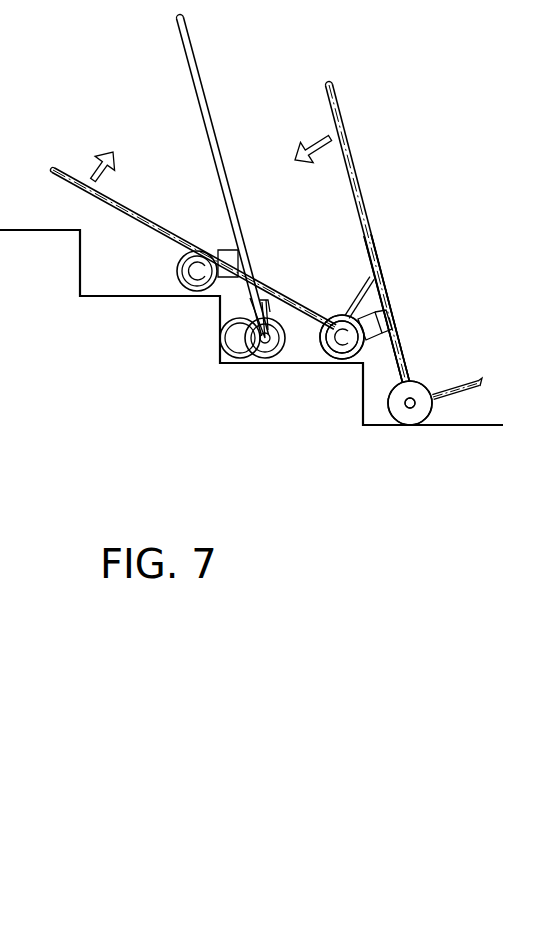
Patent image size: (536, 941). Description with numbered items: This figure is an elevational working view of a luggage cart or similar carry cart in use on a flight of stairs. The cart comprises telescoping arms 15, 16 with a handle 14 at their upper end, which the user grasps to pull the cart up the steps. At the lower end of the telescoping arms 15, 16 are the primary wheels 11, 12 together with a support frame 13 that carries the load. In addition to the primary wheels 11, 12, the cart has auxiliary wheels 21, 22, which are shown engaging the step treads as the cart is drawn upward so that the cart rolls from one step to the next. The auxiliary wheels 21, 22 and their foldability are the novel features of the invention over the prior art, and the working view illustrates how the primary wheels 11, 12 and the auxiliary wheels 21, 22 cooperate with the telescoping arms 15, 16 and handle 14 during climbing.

The primary wheel 11 is at (416, 393).
The primary wheel 12 is at (410, 403).
The support frame 13 is at (470, 387).
The handle 14 is at (333, 84).
The telescoping arm 15 is at (378, 258).
The telescoping arm 16 is at (386, 308).
The auxiliary wheel 21 is at (356, 362).
The auxiliary wheel 22 is at (342, 337).